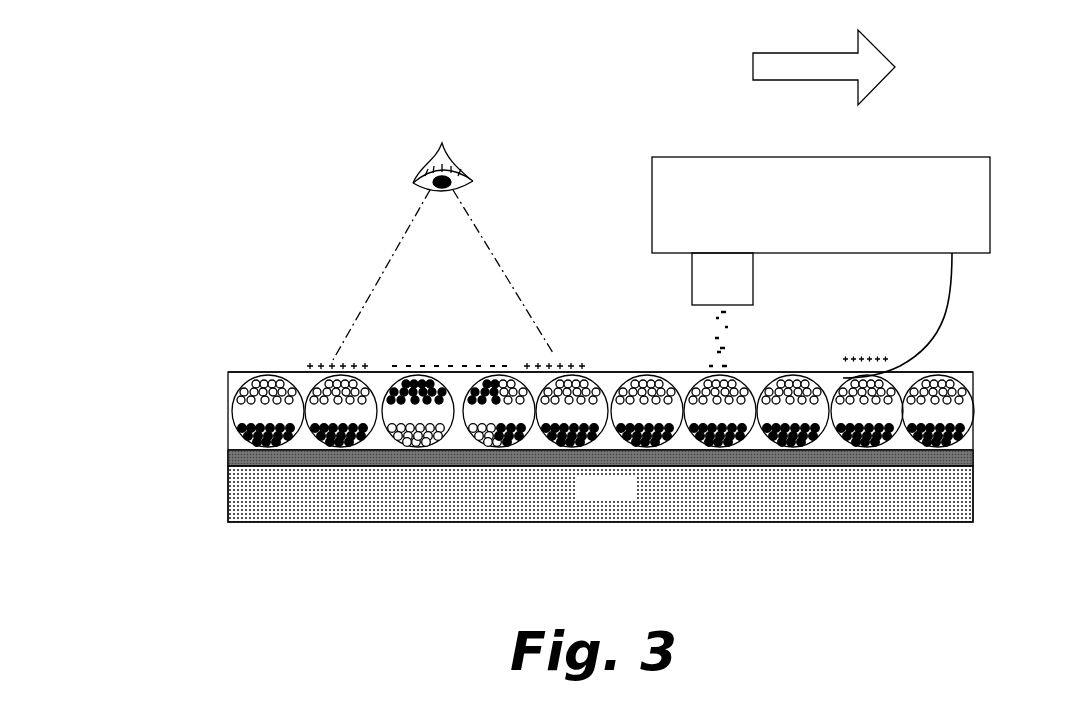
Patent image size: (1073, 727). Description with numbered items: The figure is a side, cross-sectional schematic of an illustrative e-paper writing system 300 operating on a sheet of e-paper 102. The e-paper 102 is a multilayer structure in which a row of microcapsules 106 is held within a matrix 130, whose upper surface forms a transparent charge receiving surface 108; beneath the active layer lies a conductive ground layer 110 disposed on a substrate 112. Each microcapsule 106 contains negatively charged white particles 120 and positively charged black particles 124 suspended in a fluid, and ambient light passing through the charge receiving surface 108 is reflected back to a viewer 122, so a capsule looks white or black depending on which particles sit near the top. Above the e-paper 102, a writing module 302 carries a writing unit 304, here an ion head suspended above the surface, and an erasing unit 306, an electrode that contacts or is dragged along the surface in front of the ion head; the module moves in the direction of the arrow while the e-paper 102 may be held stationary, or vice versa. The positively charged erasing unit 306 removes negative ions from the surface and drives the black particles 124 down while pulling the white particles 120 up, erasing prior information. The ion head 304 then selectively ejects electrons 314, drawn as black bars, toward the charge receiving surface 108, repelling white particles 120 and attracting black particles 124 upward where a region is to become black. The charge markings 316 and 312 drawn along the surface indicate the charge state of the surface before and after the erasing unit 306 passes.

The e-paper writing system 300 is at (158, 107).
The e-paper 102 is at (212, 340).
The microcapsule 106 is at (582, 406).
The charge receiving surface 108 is at (968, 372).
The conductive ground layer 110 is at (958, 455).
The substrate 112 is at (600, 494).
The white particles 120 is at (965, 400).
The viewer 122 is at (443, 237).
The black particles 124 is at (968, 432).
The matrix 130 is at (305, 383).
The writing module 302 is at (821, 205).
The writing unit 304 is at (722, 279).
The erasing unit 306 is at (953, 293).
The positive charges on display surface 312 is at (847, 357).
The electrons 314 is at (696, 310).
The positive surface charges 316 is at (403, 325).